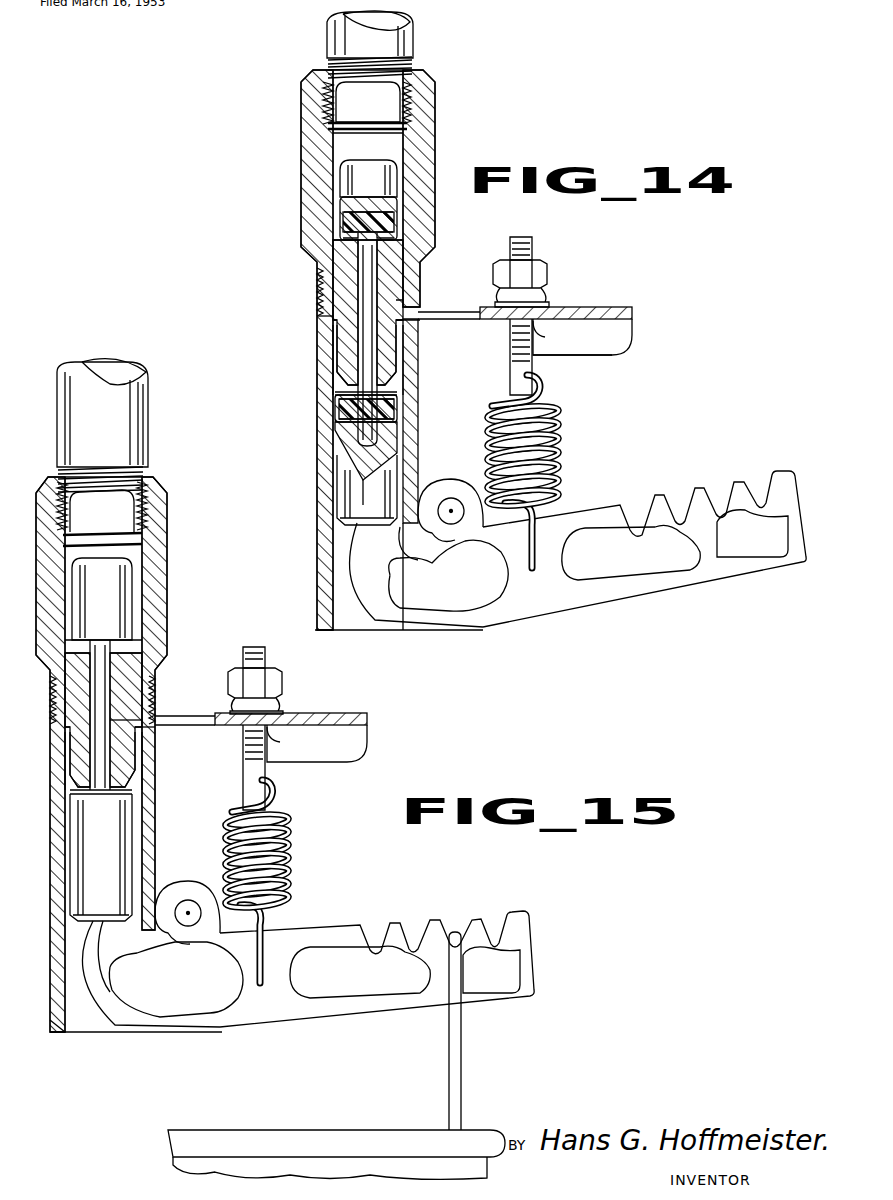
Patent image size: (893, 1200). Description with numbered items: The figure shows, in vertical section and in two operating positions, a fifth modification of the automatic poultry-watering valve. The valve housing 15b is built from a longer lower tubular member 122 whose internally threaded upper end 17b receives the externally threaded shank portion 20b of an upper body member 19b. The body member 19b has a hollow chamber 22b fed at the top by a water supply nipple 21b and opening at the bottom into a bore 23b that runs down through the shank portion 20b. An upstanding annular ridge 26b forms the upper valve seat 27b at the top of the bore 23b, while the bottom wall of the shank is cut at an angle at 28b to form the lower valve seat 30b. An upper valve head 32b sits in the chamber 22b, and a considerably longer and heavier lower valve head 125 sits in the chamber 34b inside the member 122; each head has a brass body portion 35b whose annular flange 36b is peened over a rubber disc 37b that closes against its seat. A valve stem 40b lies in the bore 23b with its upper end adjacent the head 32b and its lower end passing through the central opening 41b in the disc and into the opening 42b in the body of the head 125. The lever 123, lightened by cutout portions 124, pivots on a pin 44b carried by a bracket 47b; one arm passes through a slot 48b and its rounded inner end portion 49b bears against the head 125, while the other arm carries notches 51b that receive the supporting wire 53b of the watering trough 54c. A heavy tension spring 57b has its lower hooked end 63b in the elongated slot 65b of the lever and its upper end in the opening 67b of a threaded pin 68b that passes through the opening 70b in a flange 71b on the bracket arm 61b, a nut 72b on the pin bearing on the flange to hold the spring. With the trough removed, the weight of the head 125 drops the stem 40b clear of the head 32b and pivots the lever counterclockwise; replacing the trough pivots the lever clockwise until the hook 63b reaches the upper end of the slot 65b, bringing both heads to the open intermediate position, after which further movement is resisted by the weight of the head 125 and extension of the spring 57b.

In FIG. 14, the valve housing 15b is at (307, 316).
In FIG. 15, the valve housing 15b is at (154, 710).
In FIG. 14, the internally threaded upper end 17b is at (322, 275).
In FIG. 15, the internally threaded upper end 17b is at (152, 690).
In FIG. 14, the upper body member 19b is at (433, 98).
In FIG. 15, the upper body member 19b is at (160, 492).
In FIG. 14, the shank portion 20b is at (390, 280).
In FIG. 15, the shank portion 20b is at (120, 765).
In FIG. 14, the water supply nipple 21b is at (418, 40).
In FIG. 15, the water supply nipple 21b is at (133, 407).
In FIG. 14, the chamber 22b is at (333, 143).
In FIG. 15, the chamber 22b is at (130, 540).
In FIG. 14, the bore 23b is at (378, 300).
In FIG. 15, the bore 23b is at (112, 718).
In FIG. 14, the annular ridge 26b is at (410, 250).
In FIG. 15, the annular ridge 26b is at (118, 654).
In FIG. 14, the upper valve seat 27b is at (318, 258).
In FIG. 15, the upper valve seat 27b is at (100, 653).
In FIG. 14, the angled cut 28b is at (350, 378).
In FIG. 15, the angled cut 28b is at (128, 782).
In FIG. 14, the lower valve seat 30b is at (380, 386).
In FIG. 15, the lower valve seat 30b is at (120, 796).
In FIG. 14, the upper valve head 32b is at (345, 188).
In FIG. 15, the upper valve head 32b is at (122, 568).
In FIG. 15, the chamber 34b is at (120, 1020).
In FIG. 14, the body portion 35b is at (345, 172).
In FIG. 15, the body portion 35b is at (120, 582).
In FIG. 14, the annular flange 36b is at (340, 222).
In FIG. 14, the rubber disc 37b is at (390, 229).
In FIG. 14, the valve stem 40b is at (365, 338).
In FIG. 15, the valve stem 40b is at (100, 745).
In FIG. 15, the central opening 41b is at (350, 738).
In FIG. 14, the opening 42b is at (395, 445).
In FIG. 14, the pivot pin 44b is at (430, 480).
In FIG. 15, the pivot pin 44b is at (190, 915).
In FIG. 14, the bracket 47b is at (615, 326).
In FIG. 14, the slot 48b is at (450, 526).
In FIG. 15, the slot 48b is at (180, 940).
In FIG. 14, the rounded inner end portion 49b is at (360, 557).
In FIG. 15, the rounded inner end portion 49b is at (97, 1008).
In FIG. 14, the notches 51b is at (760, 488).
In FIG. 15, the notches 51b is at (495, 912).
In FIG. 15, the supporting wire 53b is at (452, 1075).
In FIG. 15, the poultry watering trough 54c is at (350, 1138).
In FIG. 14, the tension spring 57b is at (560, 432).
In FIG. 15, the tension spring 57b is at (290, 837).
In FIG. 14, the arm 61b is at (612, 346).
In FIG. 14, the lower hooked end 63b is at (532, 538).
In FIG. 15, the lower hooked end 63b is at (262, 955).
In FIG. 14, the elongated slot 65b is at (540, 565).
In FIG. 15, the elongated slot 65b is at (268, 980).
In FIG. 14, the opening 67b is at (530, 390).
In FIG. 15, the opening 67b is at (265, 790).
In FIG. 14, the threaded pin 68b is at (532, 240).
In FIG. 15, the threaded pin 68b is at (265, 650).
In FIG. 14, the opening 70b is at (548, 337).
In FIG. 15, the opening 70b is at (283, 742).
In FIG. 14, the flange 71b is at (605, 310).
In FIG. 15, the flange 71b is at (350, 714).
In FIG. 14, the nut 72b is at (540, 272).
In FIG. 15, the nut 72b is at (275, 683).
In FIG. 14, the lower housing member 122 is at (325, 562).
In FIG. 15, the lower housing member 122 is at (60, 1034).
In FIG. 14, the valve actuating lever 123 is at (628, 603).
In FIG. 15, the valve actuating lever 123 is at (298, 1022).
In FIG. 14, the cutout portions 124 is at (478, 600).
In FIG. 15, the cutout portions 124 is at (200, 1008).
In FIG. 14, the lower valve head 125 is at (345, 504).
In FIG. 15, the lower valve head 125 is at (100, 875).